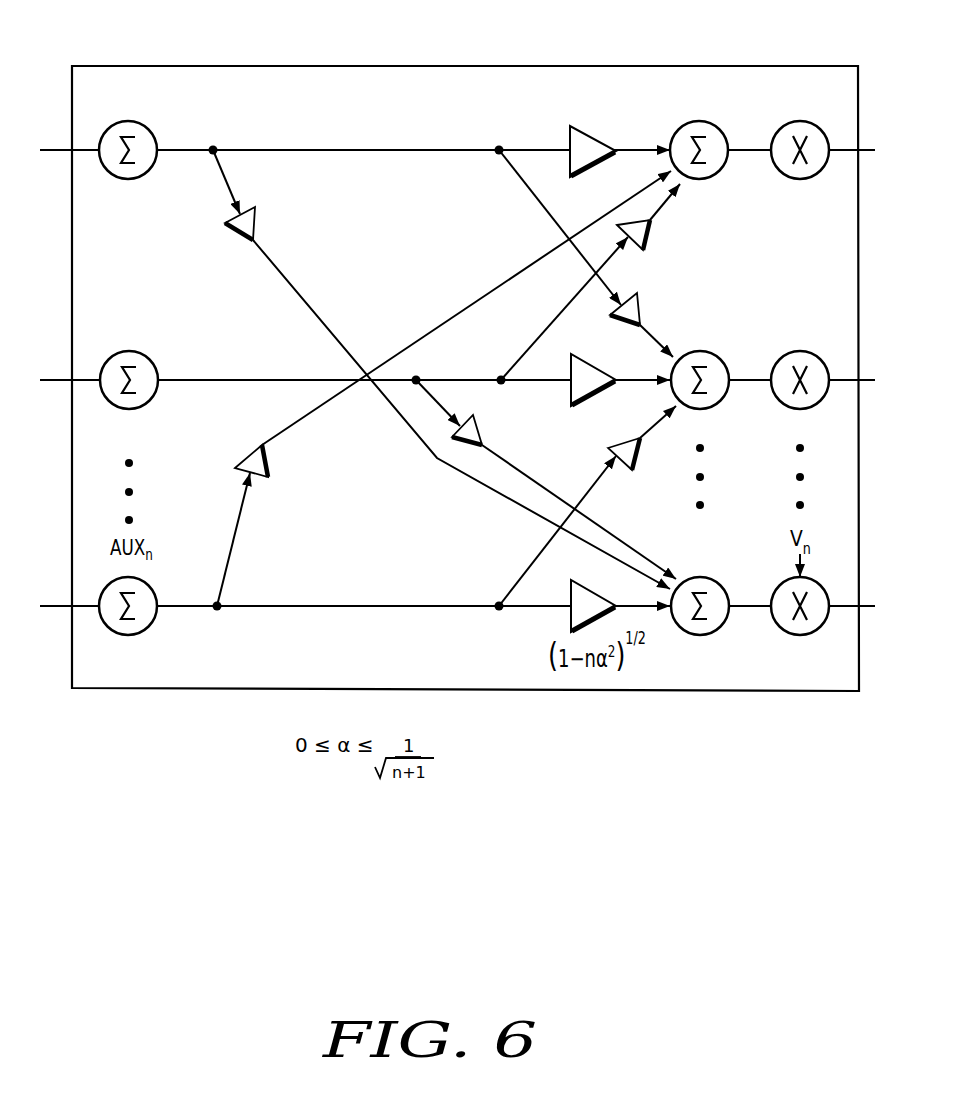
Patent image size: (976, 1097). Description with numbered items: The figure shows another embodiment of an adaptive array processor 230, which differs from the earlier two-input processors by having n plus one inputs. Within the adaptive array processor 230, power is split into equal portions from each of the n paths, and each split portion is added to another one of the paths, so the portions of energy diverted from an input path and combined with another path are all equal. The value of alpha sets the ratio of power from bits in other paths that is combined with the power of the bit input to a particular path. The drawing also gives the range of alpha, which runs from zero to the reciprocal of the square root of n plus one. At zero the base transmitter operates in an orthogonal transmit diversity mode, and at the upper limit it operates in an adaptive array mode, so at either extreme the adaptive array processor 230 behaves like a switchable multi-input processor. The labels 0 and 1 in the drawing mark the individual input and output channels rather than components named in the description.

The adaptive array processor 230 is at (212, 66).
The channel 0 (AUX0 to V0 signal path) 0 is at (457, 126).
The channel 1 (AUX1 to V1 signal path) 1 is at (457, 370).